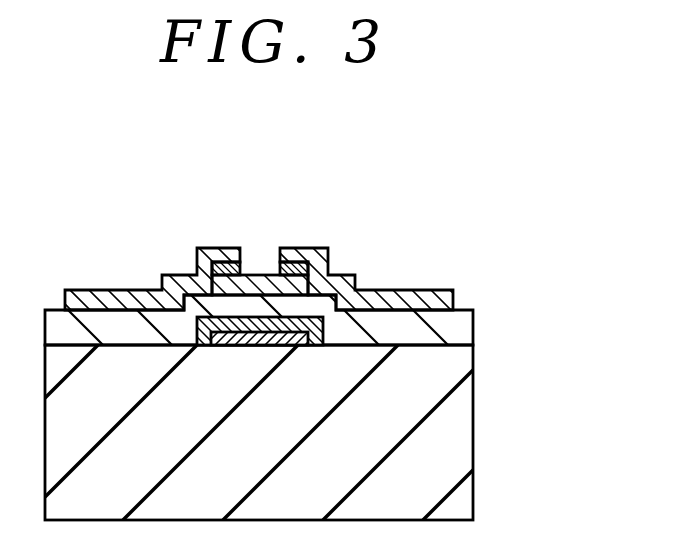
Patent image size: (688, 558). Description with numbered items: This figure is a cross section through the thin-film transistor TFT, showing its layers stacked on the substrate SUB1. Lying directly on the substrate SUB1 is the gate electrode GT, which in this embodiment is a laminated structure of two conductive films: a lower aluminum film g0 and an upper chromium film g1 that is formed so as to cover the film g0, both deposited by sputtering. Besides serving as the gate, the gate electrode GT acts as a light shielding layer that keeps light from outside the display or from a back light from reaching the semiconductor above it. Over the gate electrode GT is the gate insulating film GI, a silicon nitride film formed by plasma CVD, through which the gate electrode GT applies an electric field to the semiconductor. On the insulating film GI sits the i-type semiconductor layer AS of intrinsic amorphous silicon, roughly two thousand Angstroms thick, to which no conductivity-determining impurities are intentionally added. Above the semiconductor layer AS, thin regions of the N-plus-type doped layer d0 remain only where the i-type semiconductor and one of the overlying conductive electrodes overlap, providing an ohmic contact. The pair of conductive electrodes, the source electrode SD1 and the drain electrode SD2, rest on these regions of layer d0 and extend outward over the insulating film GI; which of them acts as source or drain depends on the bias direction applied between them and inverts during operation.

The thin-film transistor TFT is at (248, 263).
The N+-type semiconductor layer d0 is at (249, 268).
The i-type semiconductor layer AS is at (258, 283).
The drain electrode SD2 is at (98, 298).
The source electrode SD1 is at (412, 298).
The gate insulating film GI is at (453, 328).
The conductive film g1 is at (312, 344).
The conductive film g0 is at (283, 344).
The gate electrode GT is at (280, 372).
The substrate SUB1 is at (453, 415).